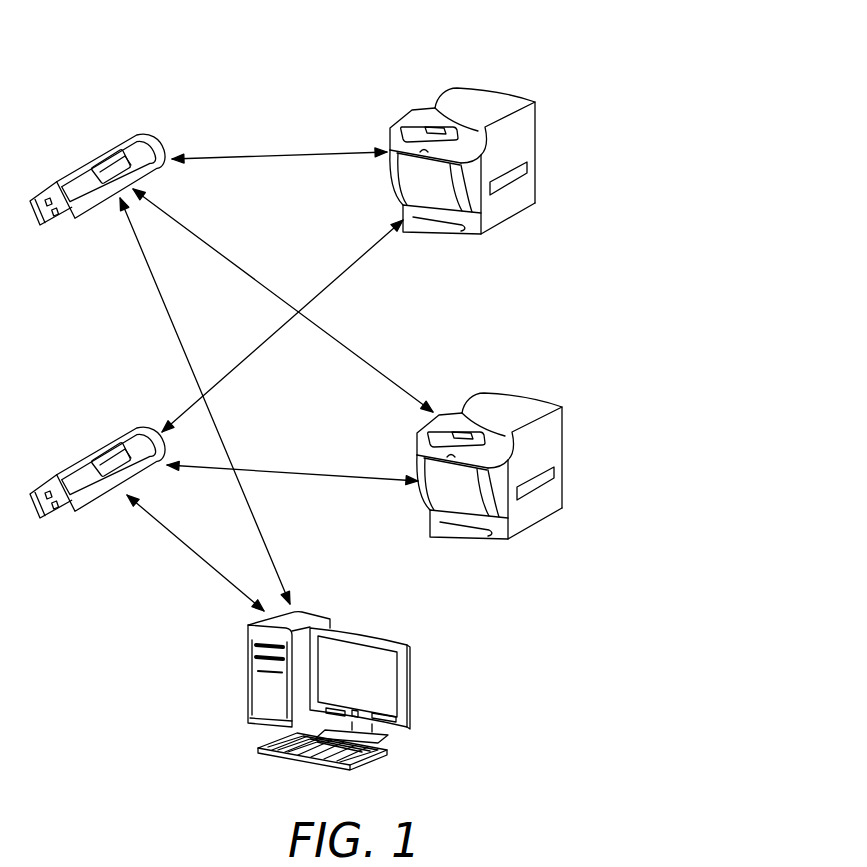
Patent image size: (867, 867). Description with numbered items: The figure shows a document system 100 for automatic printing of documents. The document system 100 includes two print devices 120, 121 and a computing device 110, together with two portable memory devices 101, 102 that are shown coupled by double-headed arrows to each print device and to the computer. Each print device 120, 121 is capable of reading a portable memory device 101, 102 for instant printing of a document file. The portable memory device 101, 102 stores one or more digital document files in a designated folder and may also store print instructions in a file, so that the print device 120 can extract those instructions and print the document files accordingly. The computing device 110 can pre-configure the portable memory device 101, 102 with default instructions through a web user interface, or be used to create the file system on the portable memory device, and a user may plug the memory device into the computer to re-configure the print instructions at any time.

The document system 100 is at (333, 72).
The portable memory device 101 is at (100, 452).
The portable memory device 102 is at (97, 160).
The computing device 110 is at (410, 688).
The print device 120 is at (515, 96).
The print device 121 is at (532, 525).